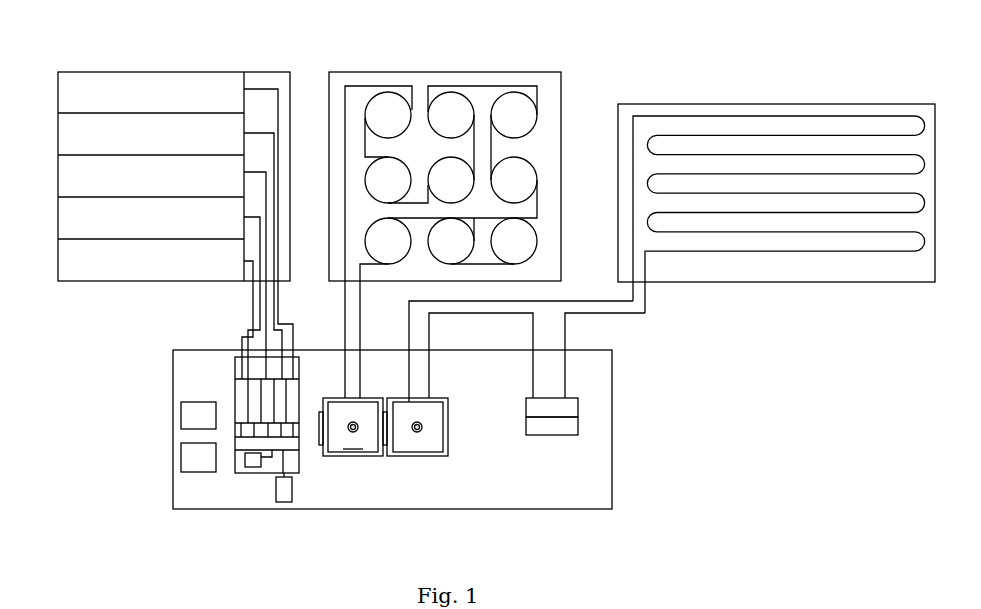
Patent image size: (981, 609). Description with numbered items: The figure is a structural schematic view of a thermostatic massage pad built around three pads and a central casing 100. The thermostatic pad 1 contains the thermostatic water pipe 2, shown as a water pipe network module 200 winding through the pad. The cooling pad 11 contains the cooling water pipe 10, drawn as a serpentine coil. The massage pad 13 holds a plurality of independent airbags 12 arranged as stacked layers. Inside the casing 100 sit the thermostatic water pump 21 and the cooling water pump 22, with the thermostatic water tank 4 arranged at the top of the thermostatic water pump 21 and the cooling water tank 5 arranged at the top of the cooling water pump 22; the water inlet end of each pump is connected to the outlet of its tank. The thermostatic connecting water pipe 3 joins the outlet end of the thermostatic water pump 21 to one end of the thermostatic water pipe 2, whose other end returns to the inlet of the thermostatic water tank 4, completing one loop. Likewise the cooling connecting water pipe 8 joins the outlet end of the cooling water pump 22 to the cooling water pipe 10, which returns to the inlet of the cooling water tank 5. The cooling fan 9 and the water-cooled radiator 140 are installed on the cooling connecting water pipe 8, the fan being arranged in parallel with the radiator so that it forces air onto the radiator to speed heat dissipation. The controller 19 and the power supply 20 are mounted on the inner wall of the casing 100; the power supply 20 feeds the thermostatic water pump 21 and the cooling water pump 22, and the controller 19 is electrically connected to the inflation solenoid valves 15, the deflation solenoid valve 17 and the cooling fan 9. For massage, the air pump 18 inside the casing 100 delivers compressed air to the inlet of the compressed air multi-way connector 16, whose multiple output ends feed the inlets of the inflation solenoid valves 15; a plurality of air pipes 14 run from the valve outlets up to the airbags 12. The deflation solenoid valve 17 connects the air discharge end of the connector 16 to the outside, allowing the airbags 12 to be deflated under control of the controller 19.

The thermostatic pad 1 is at (415, 72).
The thermostatic water pipe 2 is at (472, 86).
The water pipe network module 200 is at (515, 95).
The thermostatic connecting water pipe 3 is at (207, 314).
The thermostatic water tank 4 is at (373, 453).
The cooling water tank 5 is at (437, 457).
The cooling connecting water pipe 8 is at (429, 377).
The cooling fan 9 is at (578, 428).
The cooling water pipe 10 is at (820, 116).
The cooling pad 11 is at (757, 103).
The airbag 12 is at (130, 113).
The massage pad 13 is at (178, 70).
The air pipe 14 is at (258, 90).
The inflation solenoid valve 15 is at (248, 392).
The compressed air multi-way connector 16 is at (237, 458).
The deflation solenoid valve 17 is at (254, 468).
The air pump 18 is at (277, 498).
The controller 19 is at (197, 401).
The power supply 20 is at (181, 456).
The thermostatic water pump 21 is at (330, 457).
The cooling water pump 22 is at (432, 457).
The casing 100 is at (173, 430).
The water-cooled radiator 140 is at (578, 410).